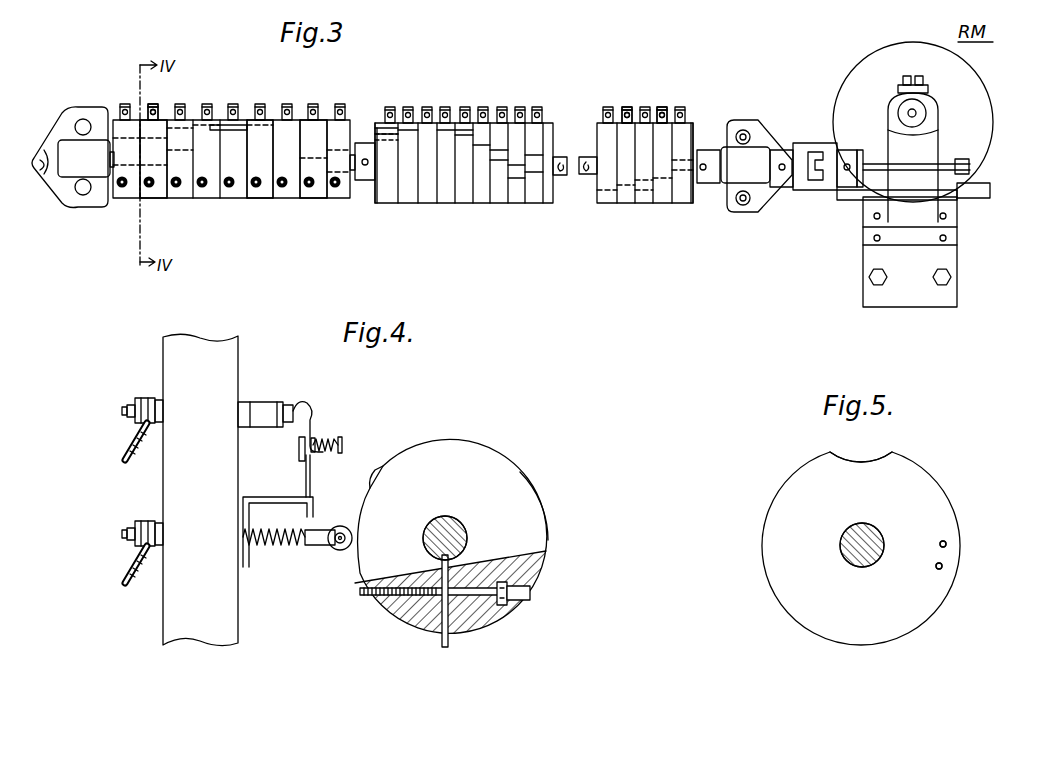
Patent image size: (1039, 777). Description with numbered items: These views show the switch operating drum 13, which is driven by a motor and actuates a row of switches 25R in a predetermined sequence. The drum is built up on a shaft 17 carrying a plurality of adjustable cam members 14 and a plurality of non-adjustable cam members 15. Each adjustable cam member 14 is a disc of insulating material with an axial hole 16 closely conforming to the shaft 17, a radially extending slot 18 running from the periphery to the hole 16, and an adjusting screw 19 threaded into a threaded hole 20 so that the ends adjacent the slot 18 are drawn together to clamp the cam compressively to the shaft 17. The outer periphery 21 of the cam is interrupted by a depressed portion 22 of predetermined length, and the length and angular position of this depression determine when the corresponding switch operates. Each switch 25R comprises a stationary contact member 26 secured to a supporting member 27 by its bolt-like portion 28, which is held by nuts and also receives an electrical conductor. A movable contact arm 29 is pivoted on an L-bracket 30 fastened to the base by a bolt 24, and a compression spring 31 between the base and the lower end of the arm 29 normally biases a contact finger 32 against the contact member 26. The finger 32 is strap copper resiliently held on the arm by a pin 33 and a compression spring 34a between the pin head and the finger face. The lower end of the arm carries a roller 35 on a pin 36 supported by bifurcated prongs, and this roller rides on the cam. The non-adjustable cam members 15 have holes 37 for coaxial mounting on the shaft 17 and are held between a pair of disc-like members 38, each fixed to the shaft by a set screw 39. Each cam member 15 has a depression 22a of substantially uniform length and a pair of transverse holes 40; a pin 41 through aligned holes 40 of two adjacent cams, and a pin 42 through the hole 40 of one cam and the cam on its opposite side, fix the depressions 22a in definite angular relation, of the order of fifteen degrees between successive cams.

In FIG. 3, the operating drum 13 is at (320, 174).
In FIG. 3, the adjustable cam member 14 is at (161, 197).
In FIG. 4, the adjustable cam member 14 is at (444, 547).
In FIG. 3, the non-adjustable cam member 15 is at (540, 158).
In FIG. 5, the non-adjustable cam member 15 is at (882, 536).
In FIG. 4, the hole 16 is at (461, 527).
In FIG. 3, the shaft 17 is at (109, 136).
In FIG. 4, the shaft 17 is at (468, 538).
In FIG. 5, the shaft 17 is at (874, 560).
In FIG. 4, the radial slot 18 is at (447, 648).
In FIG. 3, the adjusting screw 19 is at (223, 188).
In FIG. 4, the adjusting screw 19 is at (531, 598).
In FIG. 4, the threaded hole 20 is at (358, 594).
In FIG. 3, the outer periphery 21 is at (265, 190).
In FIG. 4, the outer periphery 21 is at (531, 485).
In FIG. 3, the depressed portion 22 is at (258, 122).
In FIG. 4, the depressed portion 22 is at (362, 486).
In FIG. 5, the depression 22a is at (867, 456).
In FIG. 4, the bolt 24 is at (122, 534).
In FIG. 3, the switch 25R is at (386, 156).
In FIG. 4, the switch 25R is at (316, 466).
In FIG. 4, the contact member 26 is at (286, 409).
In FIG. 4, the supporting member 27 is at (193, 348).
In FIG. 4, the bolt-like portion 28 is at (122, 411).
In FIG. 4, the movable contact arm 29 is at (311, 482).
In FIG. 4, the L-bracket 30 is at (259, 495).
In FIG. 4, the compression spring 31 is at (279, 546).
In FIG. 3, the contact finger 32 is at (158, 112).
In FIG. 4, the contact finger 32 is at (314, 434).
In FIG. 4, the pin 33 is at (343, 445).
In FIG. 4, the compression spring 34a is at (342, 444).
In FIG. 4, the roller 35 is at (343, 527).
In FIG. 4, the pin 36 is at (334, 549).
In FIG. 5, the hole 37 is at (875, 530).
In FIG. 3, the disc-like member 38 is at (378, 123).
In FIG. 3, the set screw 39 is at (365, 166).
In FIG. 5, the hole 40 is at (948, 545).
In FIG. 5, the pin 41 is at (946, 543).
In FIG. 5, the pin 42 is at (941, 569).